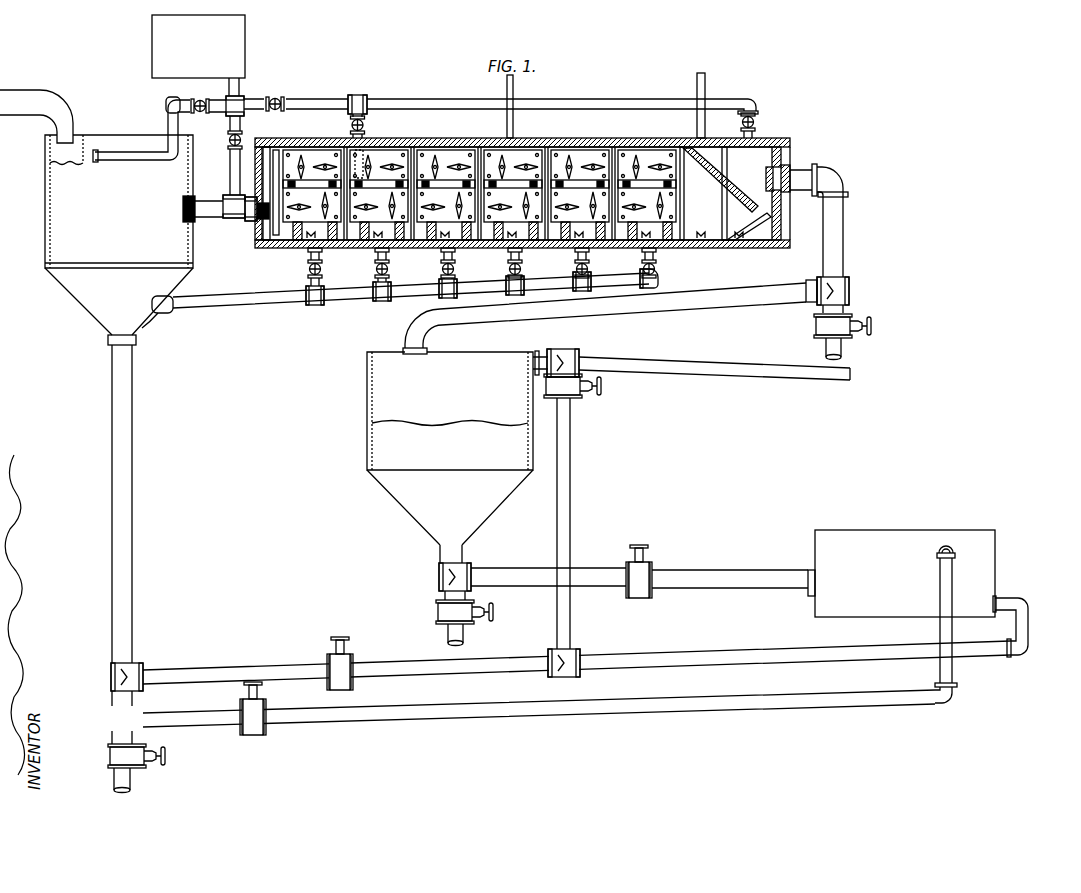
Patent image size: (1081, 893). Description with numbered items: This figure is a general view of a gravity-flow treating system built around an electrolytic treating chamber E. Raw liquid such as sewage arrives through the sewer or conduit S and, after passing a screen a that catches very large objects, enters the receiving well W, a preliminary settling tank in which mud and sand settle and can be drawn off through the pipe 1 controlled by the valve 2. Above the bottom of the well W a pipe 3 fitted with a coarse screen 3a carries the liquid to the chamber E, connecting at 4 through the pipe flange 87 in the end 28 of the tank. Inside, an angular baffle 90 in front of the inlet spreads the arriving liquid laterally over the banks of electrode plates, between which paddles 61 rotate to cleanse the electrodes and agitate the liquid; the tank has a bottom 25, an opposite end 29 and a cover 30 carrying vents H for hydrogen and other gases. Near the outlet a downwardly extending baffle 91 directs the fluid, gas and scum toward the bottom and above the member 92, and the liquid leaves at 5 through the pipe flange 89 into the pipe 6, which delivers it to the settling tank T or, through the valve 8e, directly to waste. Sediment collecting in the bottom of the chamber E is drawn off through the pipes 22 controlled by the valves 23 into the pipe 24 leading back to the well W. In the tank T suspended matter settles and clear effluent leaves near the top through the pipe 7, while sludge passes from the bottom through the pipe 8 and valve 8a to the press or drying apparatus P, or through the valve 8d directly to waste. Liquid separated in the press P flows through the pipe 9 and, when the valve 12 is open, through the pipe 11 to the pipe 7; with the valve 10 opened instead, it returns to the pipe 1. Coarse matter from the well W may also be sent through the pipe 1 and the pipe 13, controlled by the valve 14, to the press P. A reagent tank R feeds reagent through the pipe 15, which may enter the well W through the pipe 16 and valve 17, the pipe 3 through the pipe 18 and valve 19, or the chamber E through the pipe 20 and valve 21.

The reagent tank R is at (198, 46).
The pipe 15 is at (242, 89).
The sewer S is at (35, 90).
The receiving well W is at (45, 222).
The screen a is at (66, 161).
The pipe 16 is at (122, 150).
The valve 17 is at (207, 95).
The pipe 20 is at (319, 99).
The valve 21 is at (280, 98).
The vents H is at (507, 84).
The electrolytic treating chamber E is at (496, 139).
The angular baffle 90 is at (268, 149).
The end 28 is at (273, 172).
The press or drying apparatus P is at (430, 150).
The paddles 61 is at (502, 162).
The top or cover 30 is at (634, 141).
The downwardly extending baffle 91 is at (703, 147).
The member 92 is at (752, 232).
The bottom 25 is at (713, 249).
The end 29 is at (782, 233).
The outlet 5 is at (790, 172).
The pipe flange 89 is at (786, 193).
The pipe 6 is at (405, 338).
The valve 8e is at (814, 327).
The pipe 24 is at (235, 302).
The pipes 22 is at (322, 282).
The valves 23 is at (322, 266).
The screen 3a is at (183, 211).
The pipe 3 is at (213, 220).
The connection 4 is at (246, 223).
The pipe flange 87 is at (261, 222).
The pipe 18 is at (230, 162).
The valve 19 is at (227, 140).
The settling tank T is at (367, 399).
The pipe 7 is at (547, 355).
The valve 12 is at (581, 395).
The pipe 11 is at (571, 453).
The pipe 1 is at (133, 516).
The pipe 8 is at (511, 568).
The valve 8a is at (646, 565).
The valve 8d is at (438, 611).
The pipe 9 is at (202, 669).
The valve 10 is at (350, 660).
The pipe 13 is at (940, 585).
The valve 14 is at (262, 735).
The valve 2 is at (150, 766).